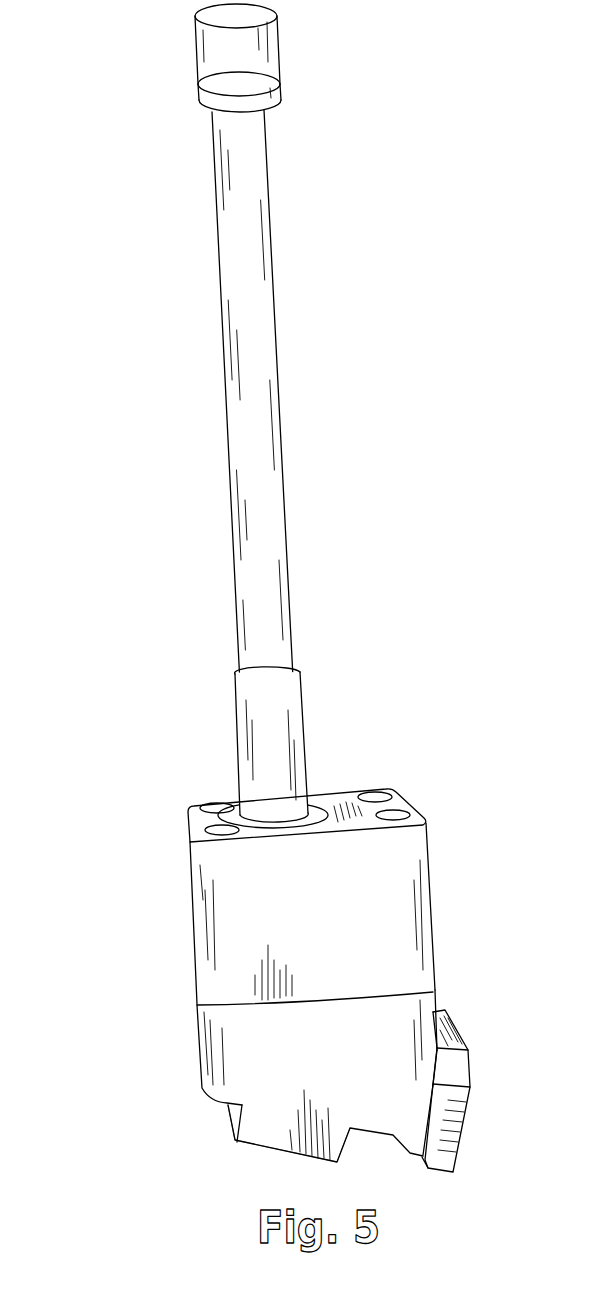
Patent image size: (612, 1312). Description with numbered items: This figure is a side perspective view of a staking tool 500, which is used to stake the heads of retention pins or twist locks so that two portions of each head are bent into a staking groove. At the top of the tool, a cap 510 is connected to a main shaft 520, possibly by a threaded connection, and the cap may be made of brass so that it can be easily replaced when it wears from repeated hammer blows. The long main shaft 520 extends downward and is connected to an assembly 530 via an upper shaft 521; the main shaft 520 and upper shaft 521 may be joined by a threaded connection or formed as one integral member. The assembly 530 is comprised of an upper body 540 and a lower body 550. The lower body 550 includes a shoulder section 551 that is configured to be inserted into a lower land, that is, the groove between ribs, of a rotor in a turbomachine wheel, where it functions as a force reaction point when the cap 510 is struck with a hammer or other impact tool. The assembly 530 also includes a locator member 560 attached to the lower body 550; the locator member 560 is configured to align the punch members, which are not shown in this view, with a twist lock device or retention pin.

The staking tool 500 is at (386, 174).
The cap 510 is at (210, 54).
The main shaft 520 is at (258, 376).
The upper shaft 521 is at (297, 725).
The assembly 530 is at (140, 941).
The upper body 540 is at (431, 895).
The lower body 550 is at (198, 1043).
The shoulder section 551 is at (268, 1150).
The locator member 560 is at (457, 1117).